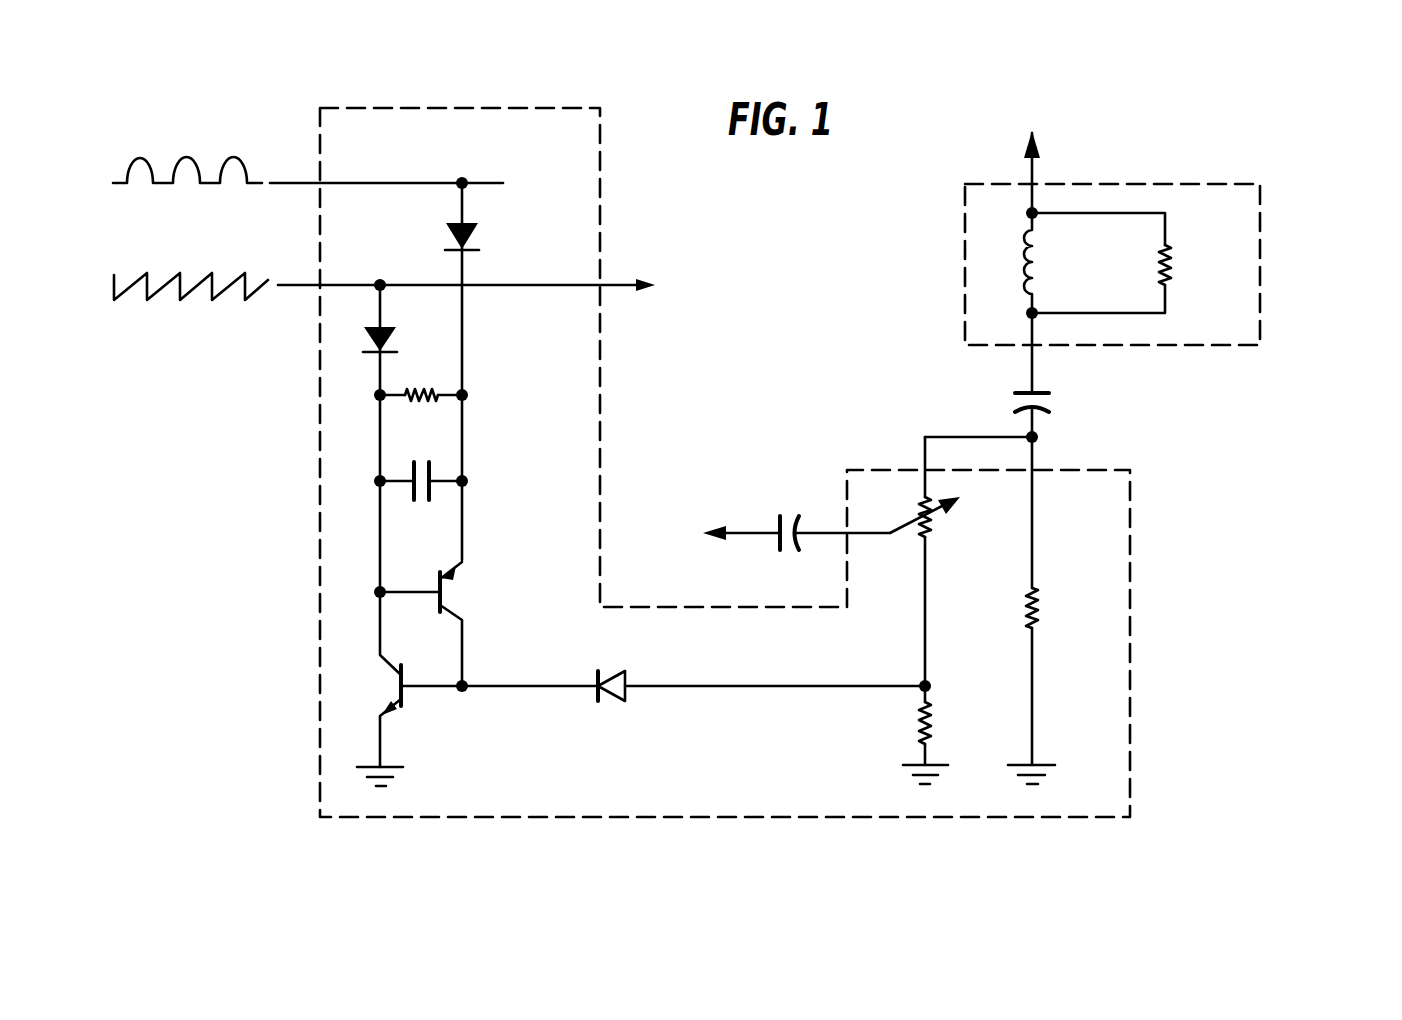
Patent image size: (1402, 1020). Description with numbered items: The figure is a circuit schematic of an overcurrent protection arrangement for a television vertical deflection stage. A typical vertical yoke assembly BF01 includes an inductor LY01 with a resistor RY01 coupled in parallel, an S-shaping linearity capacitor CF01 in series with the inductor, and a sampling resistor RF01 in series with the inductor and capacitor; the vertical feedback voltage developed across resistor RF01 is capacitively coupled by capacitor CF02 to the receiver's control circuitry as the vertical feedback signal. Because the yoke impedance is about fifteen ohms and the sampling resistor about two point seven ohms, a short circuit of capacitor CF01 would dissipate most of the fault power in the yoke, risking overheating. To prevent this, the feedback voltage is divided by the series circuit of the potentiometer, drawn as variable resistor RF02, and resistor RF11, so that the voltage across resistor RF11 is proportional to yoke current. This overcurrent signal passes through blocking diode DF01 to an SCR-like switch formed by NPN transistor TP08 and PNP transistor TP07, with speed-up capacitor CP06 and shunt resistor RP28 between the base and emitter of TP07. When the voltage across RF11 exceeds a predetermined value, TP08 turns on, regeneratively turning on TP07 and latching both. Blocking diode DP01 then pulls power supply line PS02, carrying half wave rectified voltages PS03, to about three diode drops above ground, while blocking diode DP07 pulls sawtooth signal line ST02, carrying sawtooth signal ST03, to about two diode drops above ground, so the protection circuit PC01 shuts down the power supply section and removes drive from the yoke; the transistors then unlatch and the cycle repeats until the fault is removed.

The half wave rectified voltages PS03 is at (183, 158).
The sawtooth signal ST03 is at (143, 282).
The protection circuit PC01 is at (725, 462).
The power supply line PS02 is at (503, 183).
The blocking diode DP01 is at (496, 289).
The sawtooth signal line ST02 is at (431, 283).
The blocking diode DP07 is at (410, 340).
The shunt resistor RP28 is at (421, 414).
The speed-up capacitor CP06 is at (421, 493).
The PNP transistor TP07 is at (442, 624).
The NPN transistor TP08 is at (399, 689).
The blocking diode DF01 is at (693, 706).
The capacitor CF02 is at (772, 551).
The variable resistor 470 RF02 is at (942, 561).
The resistor RF11 is at (901, 732).
The sampling resistor RF01 is at (1014, 607).
The S-shaping linearity capacitor CF01 is at (1068, 381).
The vertical yoke assembly BF01 is at (1151, 223).
The inductor LY01 is at (1064, 263).
The resistor RY01 is at (1136, 263).